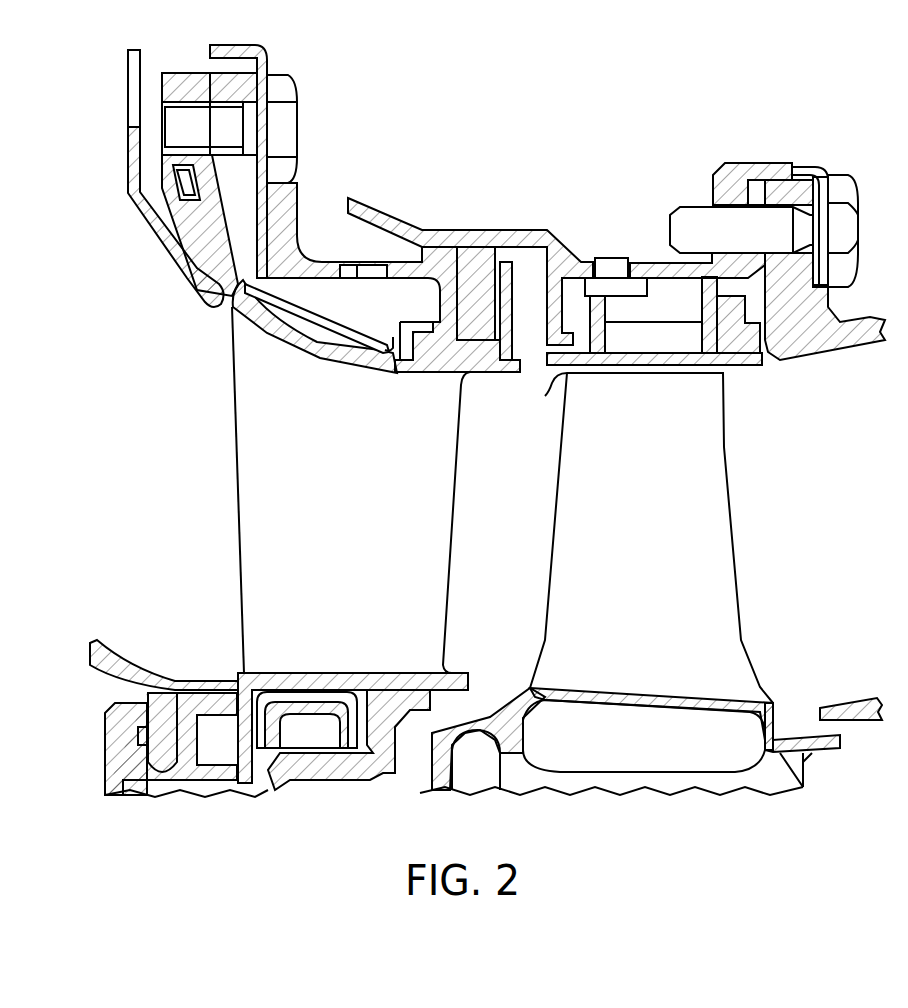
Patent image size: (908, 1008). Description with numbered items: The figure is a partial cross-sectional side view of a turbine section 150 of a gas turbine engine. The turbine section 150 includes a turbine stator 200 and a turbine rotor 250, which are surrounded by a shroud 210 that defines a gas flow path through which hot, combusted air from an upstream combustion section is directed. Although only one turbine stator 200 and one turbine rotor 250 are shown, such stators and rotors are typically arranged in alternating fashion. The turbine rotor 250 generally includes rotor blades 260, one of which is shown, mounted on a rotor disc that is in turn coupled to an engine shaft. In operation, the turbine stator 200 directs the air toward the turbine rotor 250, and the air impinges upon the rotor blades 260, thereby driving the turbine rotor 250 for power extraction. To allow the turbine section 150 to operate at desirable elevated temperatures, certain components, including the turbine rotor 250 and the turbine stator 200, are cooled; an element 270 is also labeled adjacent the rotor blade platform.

The turbine section 150 is at (398, 108).
The turbine stator 200 is at (240, 528).
The shroud 210 is at (637, 338).
The turbine rotor 250 is at (778, 610).
The rotor blades 260 is at (718, 458).
The shroud 270 is at (550, 380).